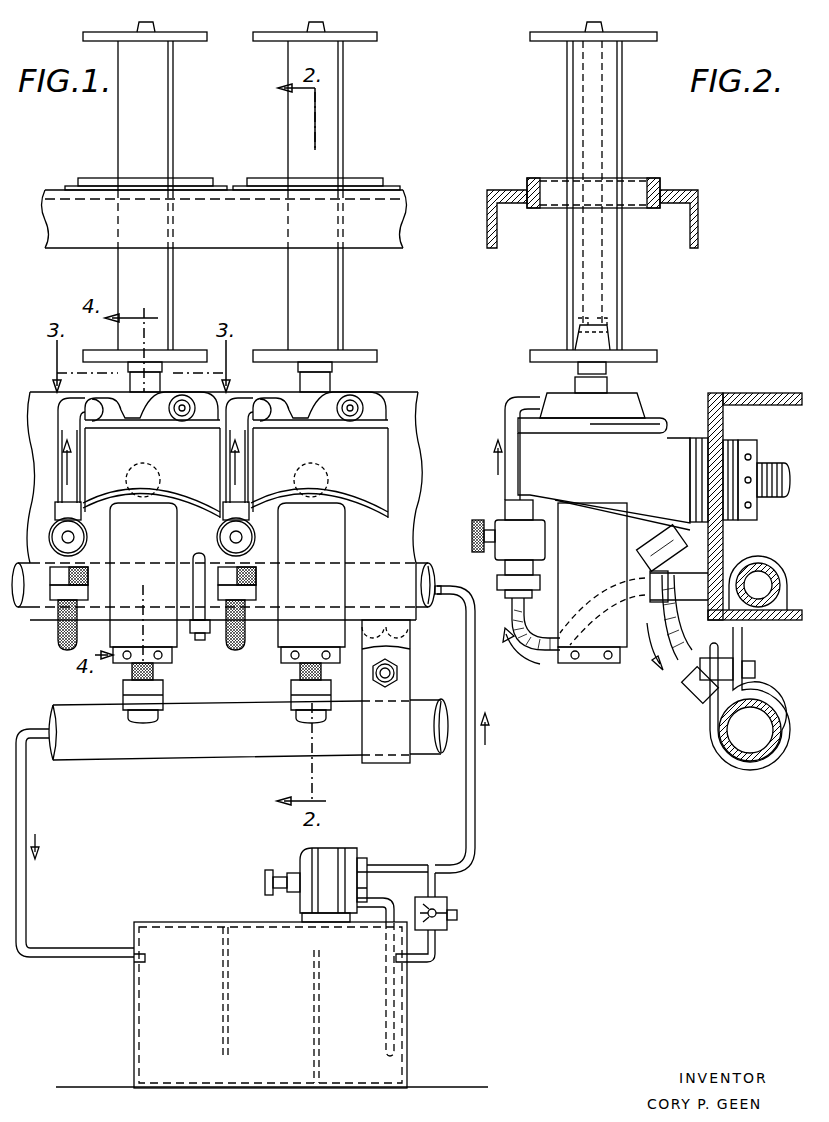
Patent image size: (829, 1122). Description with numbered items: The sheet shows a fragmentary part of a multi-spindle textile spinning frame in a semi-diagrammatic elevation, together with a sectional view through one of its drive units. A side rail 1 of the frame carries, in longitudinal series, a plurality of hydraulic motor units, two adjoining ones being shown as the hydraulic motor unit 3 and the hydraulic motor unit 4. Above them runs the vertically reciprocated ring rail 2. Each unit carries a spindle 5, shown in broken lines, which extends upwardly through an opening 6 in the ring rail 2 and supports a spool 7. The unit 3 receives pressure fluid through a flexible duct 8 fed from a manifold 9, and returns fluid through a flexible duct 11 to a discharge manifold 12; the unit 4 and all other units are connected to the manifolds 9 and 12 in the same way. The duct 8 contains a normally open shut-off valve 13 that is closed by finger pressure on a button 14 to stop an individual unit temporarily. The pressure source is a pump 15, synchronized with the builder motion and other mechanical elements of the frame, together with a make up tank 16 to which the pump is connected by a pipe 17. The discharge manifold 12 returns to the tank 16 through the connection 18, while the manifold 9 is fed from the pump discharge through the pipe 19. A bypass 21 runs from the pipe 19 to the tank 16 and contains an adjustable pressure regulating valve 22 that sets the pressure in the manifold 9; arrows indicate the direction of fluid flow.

In FIG. 1, the side rail 1 is at (402, 460).
In FIG. 2, the side rail 1 is at (725, 396).
In FIG. 1, the ring rail 2 is at (384, 219).
In FIG. 2, the ring rail 2 is at (700, 217).
In FIG. 1, the hydraulic motor unit 3 is at (361, 464).
In FIG. 2, the hydraulic motor unit 3 is at (611, 484).
In FIG. 1, the hydraulic motor unit 4 is at (192, 464).
In FIG. 2, the spindle 5 is at (600, 290).
In FIG. 2, the opening 6 is at (637, 197).
In FIG. 1, the spool 7 is at (174, 126).
In FIG. 2, the spool 7 is at (623, 126).
In FIG. 1, the flexible duct 8 is at (246, 641).
In FIG. 2, the flexible duct 8 is at (556, 656).
In FIG. 1, the manifold 9 is at (412, 580).
In FIG. 2, the manifold 9 is at (755, 562).
In FIG. 1, the flexible duct 11 is at (300, 672).
In FIG. 2, the flexible duct 11 is at (680, 665).
In FIG. 1, the discharge manifold 12 is at (234, 748).
In FIG. 2, the discharge manifold 12 is at (745, 760).
In FIG. 1, the shut-off valve 13 is at (217, 538).
In FIG. 2, the shut-off valve 13 is at (501, 515).
In FIG. 1, the button 14 is at (250, 543).
In FIG. 2, the button 14 is at (472, 530).
In FIG. 1, the pump 15 is at (323, 860).
In FIG. 1, the make up tank 16 is at (408, 1045).
In FIG. 1, the pipe 17 is at (392, 1008).
In FIG. 1, the connection 18 is at (32, 900).
In FIG. 1, the pipe 19 is at (477, 787).
In FIG. 1, the bypass 21 is at (440, 878).
In FIG. 1, the pressure regulating valve 22 is at (448, 900).